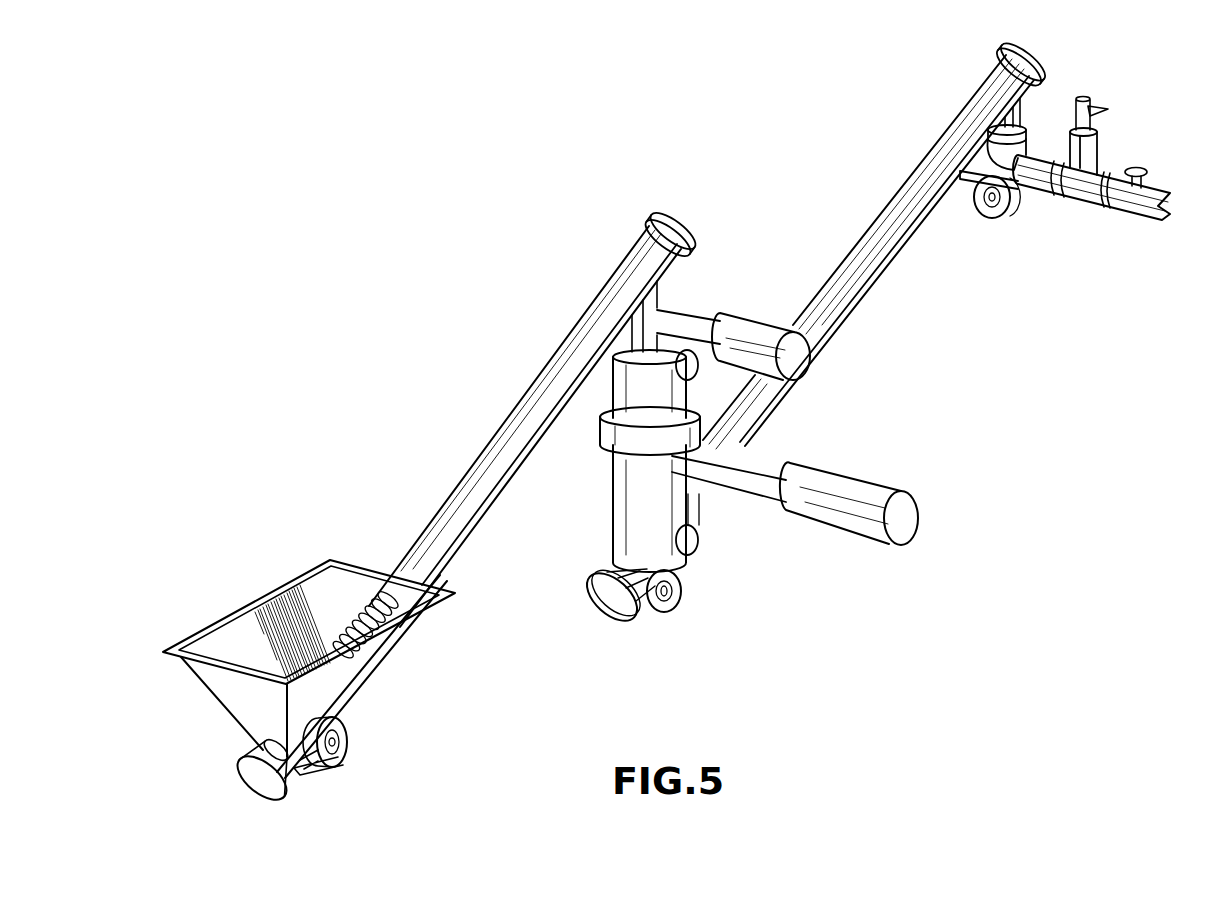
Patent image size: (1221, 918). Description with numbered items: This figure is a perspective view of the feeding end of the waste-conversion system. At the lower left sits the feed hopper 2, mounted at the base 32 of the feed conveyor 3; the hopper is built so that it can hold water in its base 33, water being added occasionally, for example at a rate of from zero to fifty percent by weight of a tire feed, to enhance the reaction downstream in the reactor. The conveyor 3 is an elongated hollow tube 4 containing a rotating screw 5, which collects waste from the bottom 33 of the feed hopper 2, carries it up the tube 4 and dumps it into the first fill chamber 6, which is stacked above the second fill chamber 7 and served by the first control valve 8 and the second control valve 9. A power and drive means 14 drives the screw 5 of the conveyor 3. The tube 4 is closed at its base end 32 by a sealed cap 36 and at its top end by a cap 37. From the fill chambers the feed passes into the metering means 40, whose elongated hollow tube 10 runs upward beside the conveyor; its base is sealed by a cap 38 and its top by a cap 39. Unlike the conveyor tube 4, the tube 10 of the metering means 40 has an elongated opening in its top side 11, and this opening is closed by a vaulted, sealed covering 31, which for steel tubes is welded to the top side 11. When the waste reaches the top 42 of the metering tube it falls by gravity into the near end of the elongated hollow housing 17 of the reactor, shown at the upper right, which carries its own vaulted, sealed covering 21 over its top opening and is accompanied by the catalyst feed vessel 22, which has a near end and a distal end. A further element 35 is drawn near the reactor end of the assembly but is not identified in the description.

The feed hopper 2 is at (241, 622).
The feed conveyor 3 is at (526, 406).
The elongated hollow tube 4 is at (445, 552).
The rotatable screw 5 is at (362, 612).
The first fill chamber 6 is at (628, 405).
The second fill chamber 7 is at (622, 513).
The first control valve 8 is at (752, 323).
The second control valve 9 is at (858, 493).
The elongated hollow housing 10 is at (833, 280).
The top side 11 is at (876, 243).
The power and drive means 14 is at (348, 743).
The elongated hollow housing 17 is at (1148, 220).
The vaulted, sealed covering 21 is at (1105, 187).
The catalyst feed vessel 22 is at (1063, 172).
The vaulted, sealed covering 31 is at (882, 255).
The base end 32 is at (305, 768).
The base 33 is at (312, 708).
The wheel 35 is at (976, 195).
The sealed cap 36 is at (247, 778).
The cap 37 is at (678, 222).
The cap 38 is at (608, 614).
The cap 39 is at (1045, 52).
The metering means 40 is at (876, 243).
The top 42 is at (1000, 60).